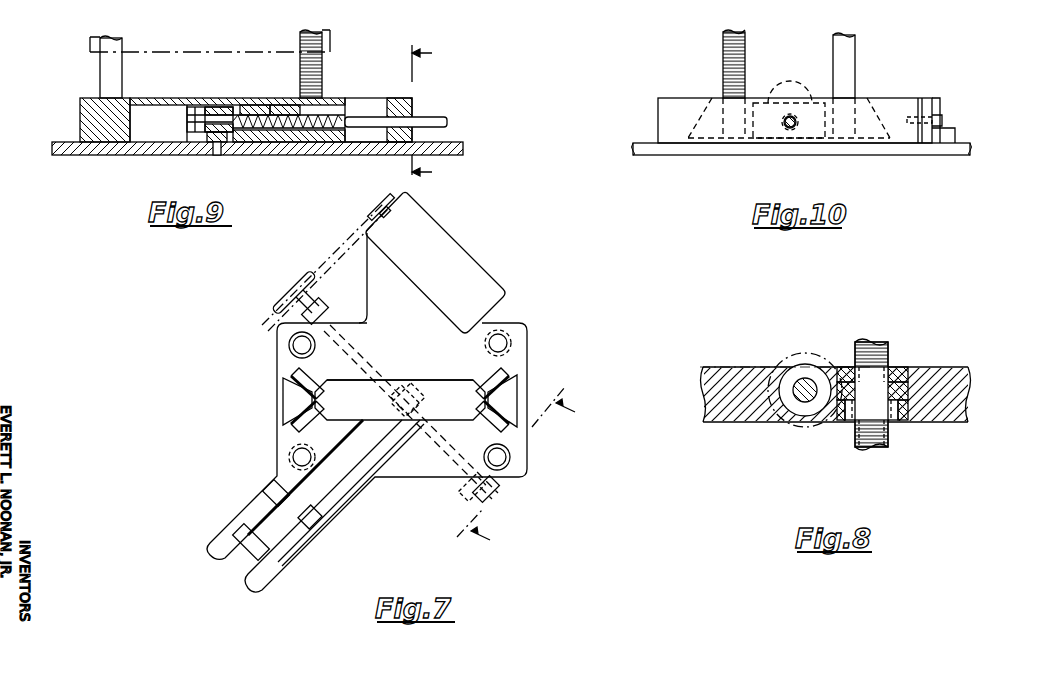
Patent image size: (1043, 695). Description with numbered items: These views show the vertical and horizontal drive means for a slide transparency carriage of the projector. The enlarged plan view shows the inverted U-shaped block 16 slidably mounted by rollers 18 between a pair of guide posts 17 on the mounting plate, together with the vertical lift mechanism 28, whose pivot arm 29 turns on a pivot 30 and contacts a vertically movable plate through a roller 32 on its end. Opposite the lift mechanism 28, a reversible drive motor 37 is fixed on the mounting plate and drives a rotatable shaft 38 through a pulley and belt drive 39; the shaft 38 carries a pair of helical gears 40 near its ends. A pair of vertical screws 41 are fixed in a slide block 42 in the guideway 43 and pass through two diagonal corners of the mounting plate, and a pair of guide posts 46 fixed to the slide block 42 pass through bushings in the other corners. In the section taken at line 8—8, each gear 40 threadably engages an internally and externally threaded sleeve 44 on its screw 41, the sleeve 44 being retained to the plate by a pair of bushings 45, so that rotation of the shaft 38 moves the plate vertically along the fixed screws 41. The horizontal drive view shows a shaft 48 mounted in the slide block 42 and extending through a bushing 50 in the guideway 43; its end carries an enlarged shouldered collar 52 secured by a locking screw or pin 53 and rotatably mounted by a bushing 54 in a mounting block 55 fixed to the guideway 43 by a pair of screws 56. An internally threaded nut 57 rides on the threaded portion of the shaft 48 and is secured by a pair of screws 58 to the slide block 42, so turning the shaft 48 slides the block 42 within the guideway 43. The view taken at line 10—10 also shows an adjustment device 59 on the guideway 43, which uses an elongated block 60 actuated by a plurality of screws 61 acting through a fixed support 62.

In FIG. 7, the section line 8— 8 is at (521, 472).
In FIG. 9, the section line 10— 10 is at (433, 113).
In FIG. 7, the inverted U-shaped block 16 is at (462, 382).
In FIG. 7, the guide posts 17 is at (284, 392).
In FIG. 7, the rollers 18 is at (305, 372).
In FIG. 7, the vertical lift mechanism 28 is at (236, 440).
In FIG. 7, the pivot arm 29 is at (362, 452).
In FIG. 7, the pivot 30 is at (314, 522).
In FIG. 7, the roller 32 is at (428, 392).
In FIG. 7, the reversible drive motor 37 is at (455, 250).
In FIG. 8, the rotatable shaft 38 is at (800, 402).
In FIG. 7, the rotatable shaft 38 is at (306, 300).
In FIG. 7, the pulley and belt drive 39 is at (332, 251).
In FIG. 8, the helical gears 40 is at (783, 358).
In FIG. 7, the helical gears 40 is at (328, 312).
In FIG. 9, the vertical screws 41 is at (322, 56).
In FIG. 10, the vertical screws 41 is at (745, 57).
In FIG. 8, the vertical screws 41 is at (888, 352).
In FIG. 7, the vertical screws 41 is at (289, 346).
In FIG. 9, the slide block 42 is at (88, 106).
In FIG. 10, the slide block 42 is at (710, 105).
In FIG. 9, the guideway 43 is at (395, 108).
In FIG. 10, the guideway 43 is at (675, 104).
In FIG. 8, the threaded sleeve 44 is at (912, 400).
In FIG. 8, the bushings 45 is at (906, 372).
In FIG. 9, the guide posts 46 is at (100, 78).
In FIG. 10, the guide posts 46 is at (855, 57).
In FIG. 7, the guide posts 46 is at (293, 458).
In FIG. 9, the shaft 48 is at (432, 117).
In FIG. 10, the shaft 48 is at (797, 126).
In FIG. 9, the bushing 50 is at (380, 112).
In FIG. 10, the bushing 50 is at (784, 128).
In FIG. 9, the enlarged shouldered collar 52 is at (188, 112).
In FIG. 9, the locking screw or pin 53 is at (187, 128).
In FIG. 9, the bushing 54 is at (222, 106).
In FIG. 9, the mounting block 55 is at (212, 142).
In FIG. 9, the screws 56 is at (220, 142).
In FIG. 9, the internally threaded nut 57 is at (258, 104).
In FIG. 9, the screws 58 is at (280, 104).
In FIG. 10, the screws 58 is at (790, 100).
In FIG. 10, the adjustment device 59 is at (1012, 137).
In FIG. 10, the elongated block 60 is at (880, 104).
In FIG. 10, the screws 61 is at (938, 118).
In FIG. 10, the fixed support 62 is at (934, 100).